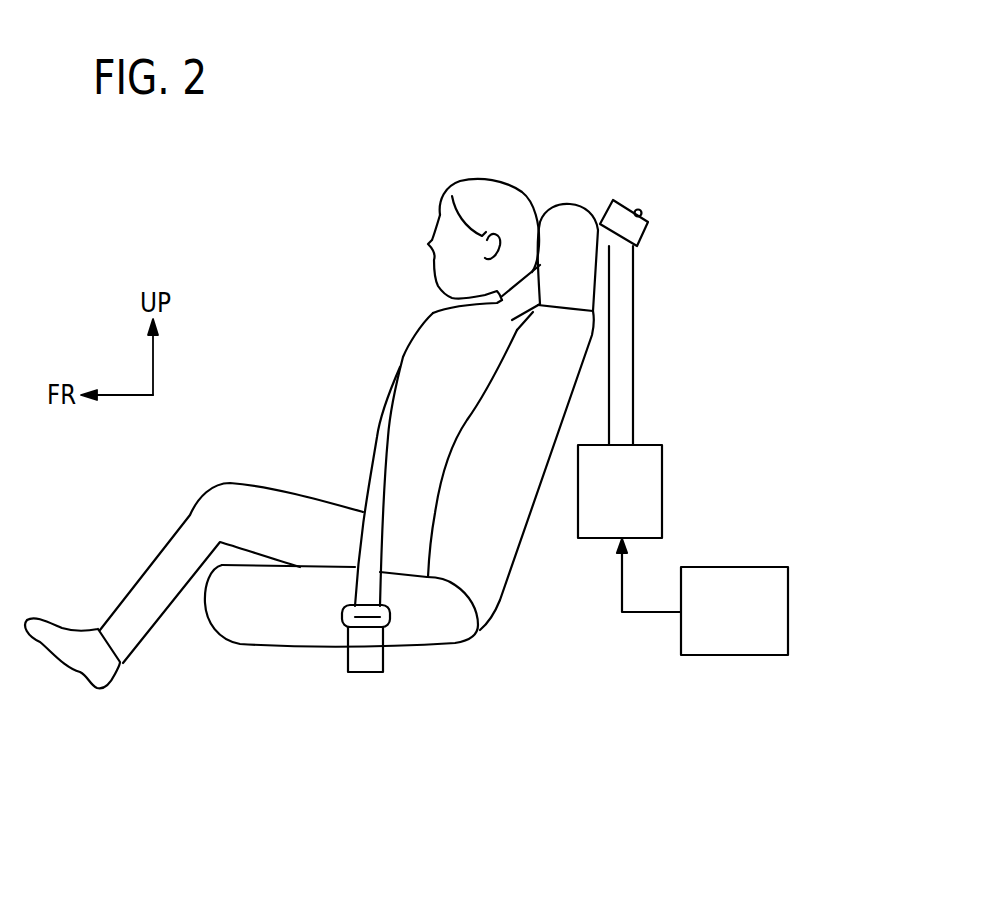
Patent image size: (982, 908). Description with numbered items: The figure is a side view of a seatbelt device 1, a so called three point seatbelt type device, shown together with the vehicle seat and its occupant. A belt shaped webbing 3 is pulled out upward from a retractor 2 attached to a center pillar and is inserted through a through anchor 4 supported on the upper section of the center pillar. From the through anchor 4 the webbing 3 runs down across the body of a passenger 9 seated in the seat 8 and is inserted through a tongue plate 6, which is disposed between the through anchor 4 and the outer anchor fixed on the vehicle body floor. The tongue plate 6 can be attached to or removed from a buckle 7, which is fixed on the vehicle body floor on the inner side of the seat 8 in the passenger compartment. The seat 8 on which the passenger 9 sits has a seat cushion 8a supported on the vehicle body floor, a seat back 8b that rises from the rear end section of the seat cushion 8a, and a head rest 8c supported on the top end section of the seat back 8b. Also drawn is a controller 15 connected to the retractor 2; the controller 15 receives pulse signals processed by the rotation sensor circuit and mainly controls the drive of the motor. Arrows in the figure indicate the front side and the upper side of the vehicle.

The seatbelt device 1 is at (714, 171).
The retractor 2 is at (668, 478).
The webbing 3 is at (640, 320).
The through anchor 4 is at (613, 204).
The tongue plate 6 is at (346, 614).
The buckle 7 is at (370, 660).
The seat 8 is at (508, 615).
The seat cushion 8a is at (247, 622).
The seat back 8b is at (517, 513).
The head rest 8c is at (567, 212).
The passenger 9 is at (459, 176).
The controller 15 is at (737, 657).